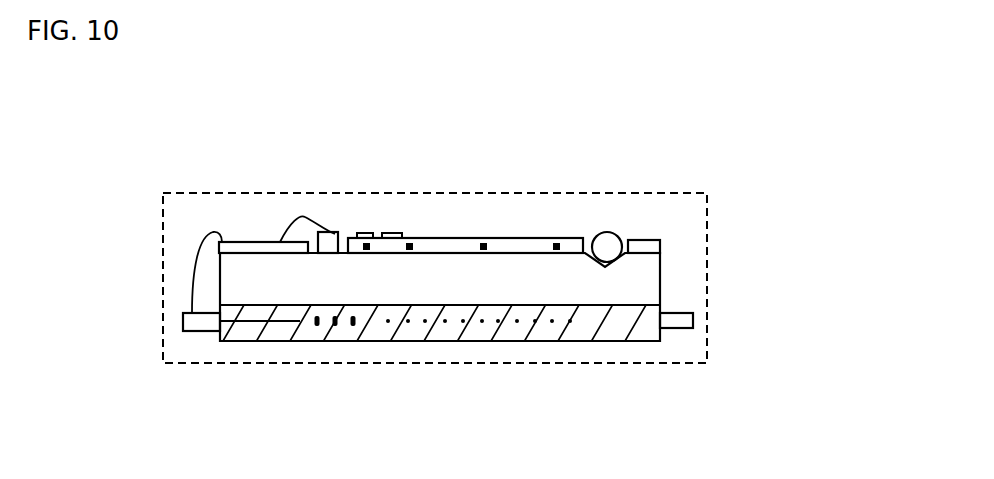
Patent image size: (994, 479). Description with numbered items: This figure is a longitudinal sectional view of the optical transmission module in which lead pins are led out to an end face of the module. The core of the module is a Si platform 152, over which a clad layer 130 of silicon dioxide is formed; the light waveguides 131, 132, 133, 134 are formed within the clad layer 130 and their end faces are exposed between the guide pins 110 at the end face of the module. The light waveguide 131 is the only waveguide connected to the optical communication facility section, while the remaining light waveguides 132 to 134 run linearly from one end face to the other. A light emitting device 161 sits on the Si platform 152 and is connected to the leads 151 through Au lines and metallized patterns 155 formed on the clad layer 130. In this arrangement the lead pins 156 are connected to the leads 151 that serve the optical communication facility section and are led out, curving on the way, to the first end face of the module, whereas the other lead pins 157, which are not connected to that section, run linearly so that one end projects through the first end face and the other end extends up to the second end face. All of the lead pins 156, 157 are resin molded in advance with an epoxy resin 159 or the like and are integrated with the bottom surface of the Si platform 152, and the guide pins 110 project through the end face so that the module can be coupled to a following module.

The guide pin 110 is at (607, 232).
The clad layer 130 is at (518, 245).
The light waveguide 131 is at (369, 250).
The light waveguide 132 is at (410, 243).
The light waveguide 133 is at (483, 247).
The light waveguide 134 is at (557, 247).
The lead 151 is at (200, 331).
The Si platform 152 is at (262, 273).
The metallized pattern 155 is at (388, 233).
The lead pin 156 is at (300, 321).
The lead pin 157 is at (447, 317).
The epoxy resin 159 is at (585, 333).
The light emitting device 161 is at (333, 232).